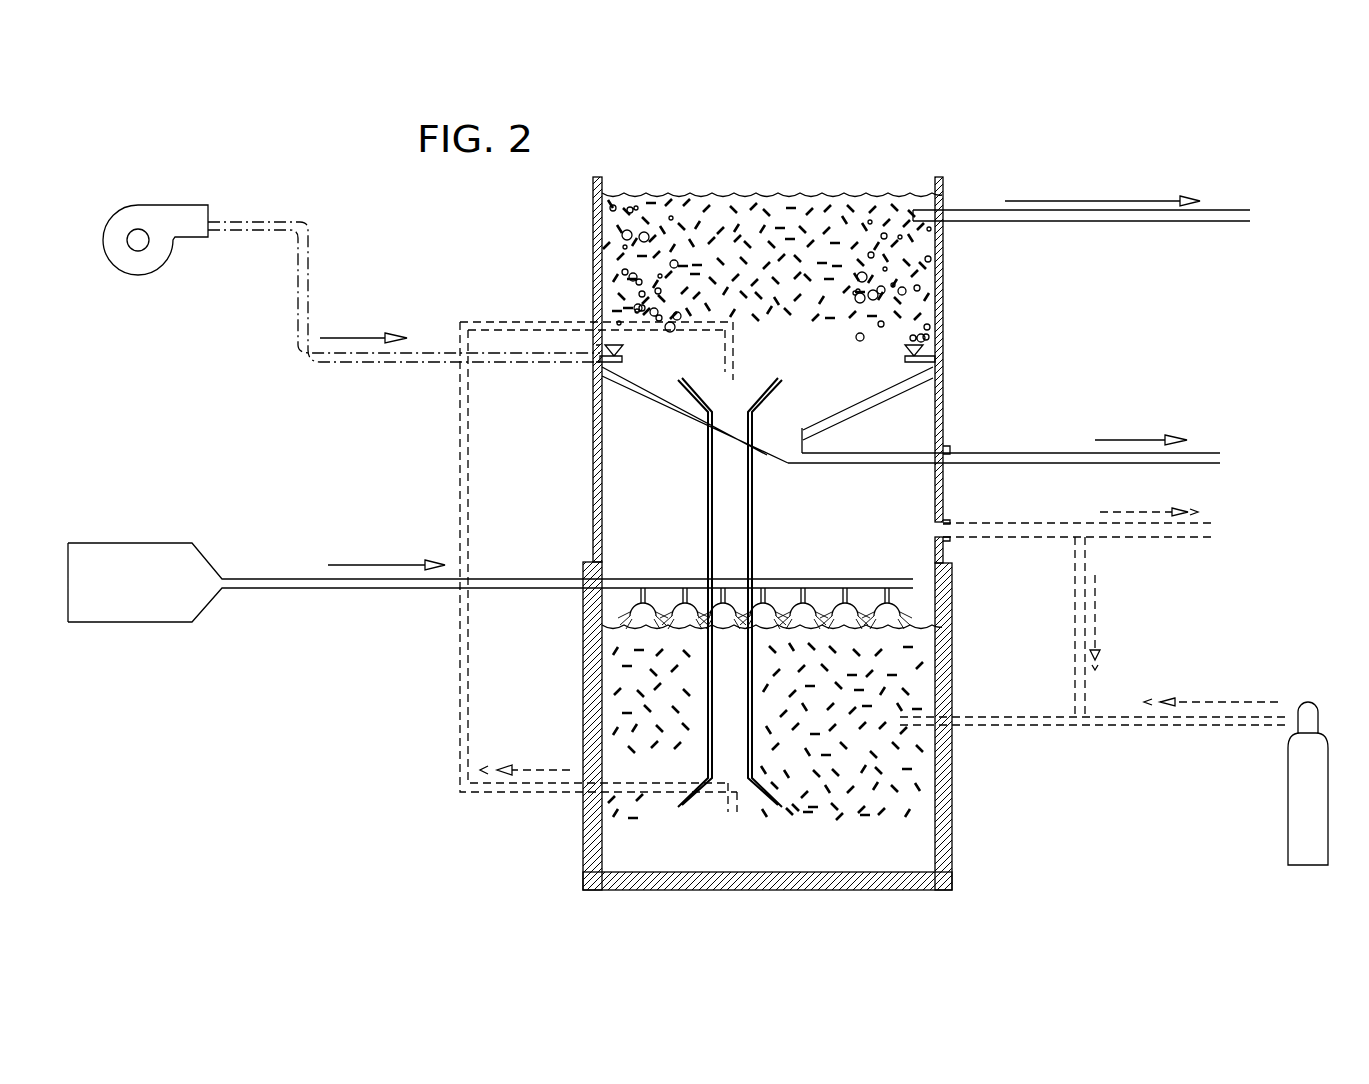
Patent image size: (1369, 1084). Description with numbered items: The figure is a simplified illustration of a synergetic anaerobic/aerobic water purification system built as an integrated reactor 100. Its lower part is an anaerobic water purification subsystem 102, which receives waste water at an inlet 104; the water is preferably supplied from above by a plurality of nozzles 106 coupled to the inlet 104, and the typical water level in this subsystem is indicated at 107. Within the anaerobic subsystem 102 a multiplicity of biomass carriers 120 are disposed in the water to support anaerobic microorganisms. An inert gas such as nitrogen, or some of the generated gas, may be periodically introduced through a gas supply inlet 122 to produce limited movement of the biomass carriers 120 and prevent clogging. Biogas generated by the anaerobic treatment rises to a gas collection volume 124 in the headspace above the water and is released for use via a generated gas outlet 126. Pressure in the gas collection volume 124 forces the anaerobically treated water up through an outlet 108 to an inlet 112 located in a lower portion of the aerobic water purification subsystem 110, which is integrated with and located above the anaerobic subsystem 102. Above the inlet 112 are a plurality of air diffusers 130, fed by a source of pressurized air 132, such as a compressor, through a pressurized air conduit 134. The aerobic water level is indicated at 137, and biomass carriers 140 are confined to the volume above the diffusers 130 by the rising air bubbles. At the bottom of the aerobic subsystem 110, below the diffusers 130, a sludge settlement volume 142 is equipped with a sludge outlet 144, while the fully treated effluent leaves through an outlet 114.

The integrated reactor 100 is at (953, 388).
The anaerobic water purification subsystem 102 is at (950, 705).
The inlet 104 is at (105, 543).
The nozzles 106 is at (863, 648).
The water level 107 is at (758, 626).
The outlet 108 is at (732, 808).
The aerobic water purification subsystem 110 is at (593, 285).
The inlet 112 is at (735, 377).
The outlet 114 is at (965, 207).
The biomass carriers 120 is at (850, 742).
The gas supply inlet 122 is at (1135, 726).
The gas collection volume 124 is at (658, 480).
The generated gas outlet 126 is at (1022, 537).
The air diffusers 130 is at (600, 372).
The source of pressurized air 132 is at (170, 262).
The pressurized air conduit 134 is at (305, 288).
The water level 137 is at (708, 196).
The biomass carriers 140 is at (848, 270).
The sludge settlement volume 142 is at (698, 405).
The sludge outlet 144 is at (1013, 462).